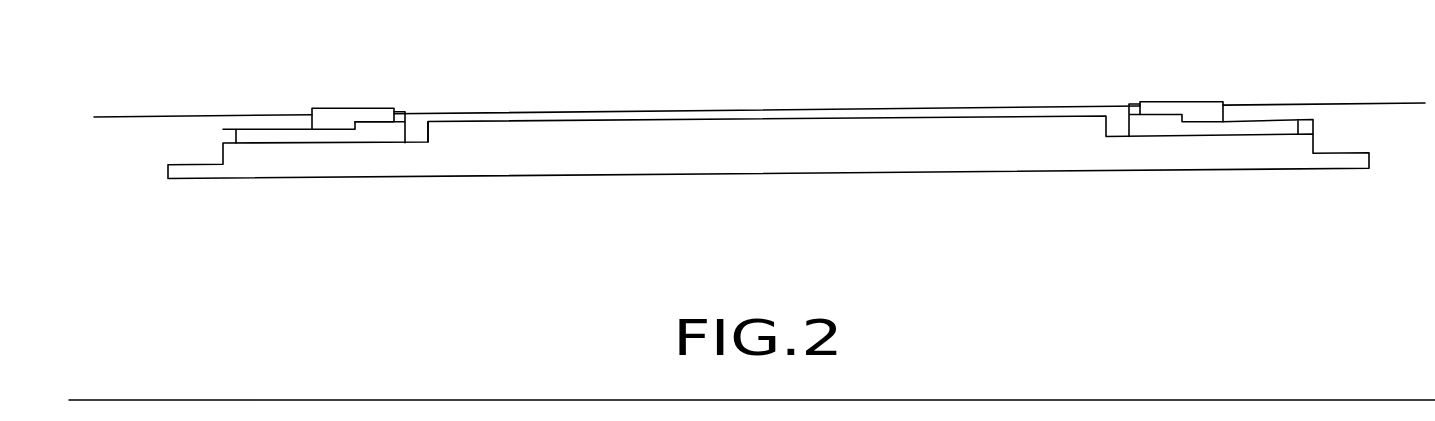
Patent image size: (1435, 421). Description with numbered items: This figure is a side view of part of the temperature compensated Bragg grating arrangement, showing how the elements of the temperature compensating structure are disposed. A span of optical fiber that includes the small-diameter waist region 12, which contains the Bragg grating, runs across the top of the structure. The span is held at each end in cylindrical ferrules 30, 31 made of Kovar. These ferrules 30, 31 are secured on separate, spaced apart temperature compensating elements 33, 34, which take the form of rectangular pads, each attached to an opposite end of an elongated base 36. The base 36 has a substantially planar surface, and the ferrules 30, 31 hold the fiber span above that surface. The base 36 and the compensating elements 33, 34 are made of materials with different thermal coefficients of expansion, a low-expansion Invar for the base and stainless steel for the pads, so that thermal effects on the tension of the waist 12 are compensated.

The waist region 12 is at (759, 112).
The cylindrical ferrule 30 is at (357, 112).
The cylindrical ferrule 31 is at (1198, 102).
The temperature compensating element 33 is at (337, 139).
The temperature compensating element 34 is at (1178, 132).
The elongated base 36 is at (763, 158).